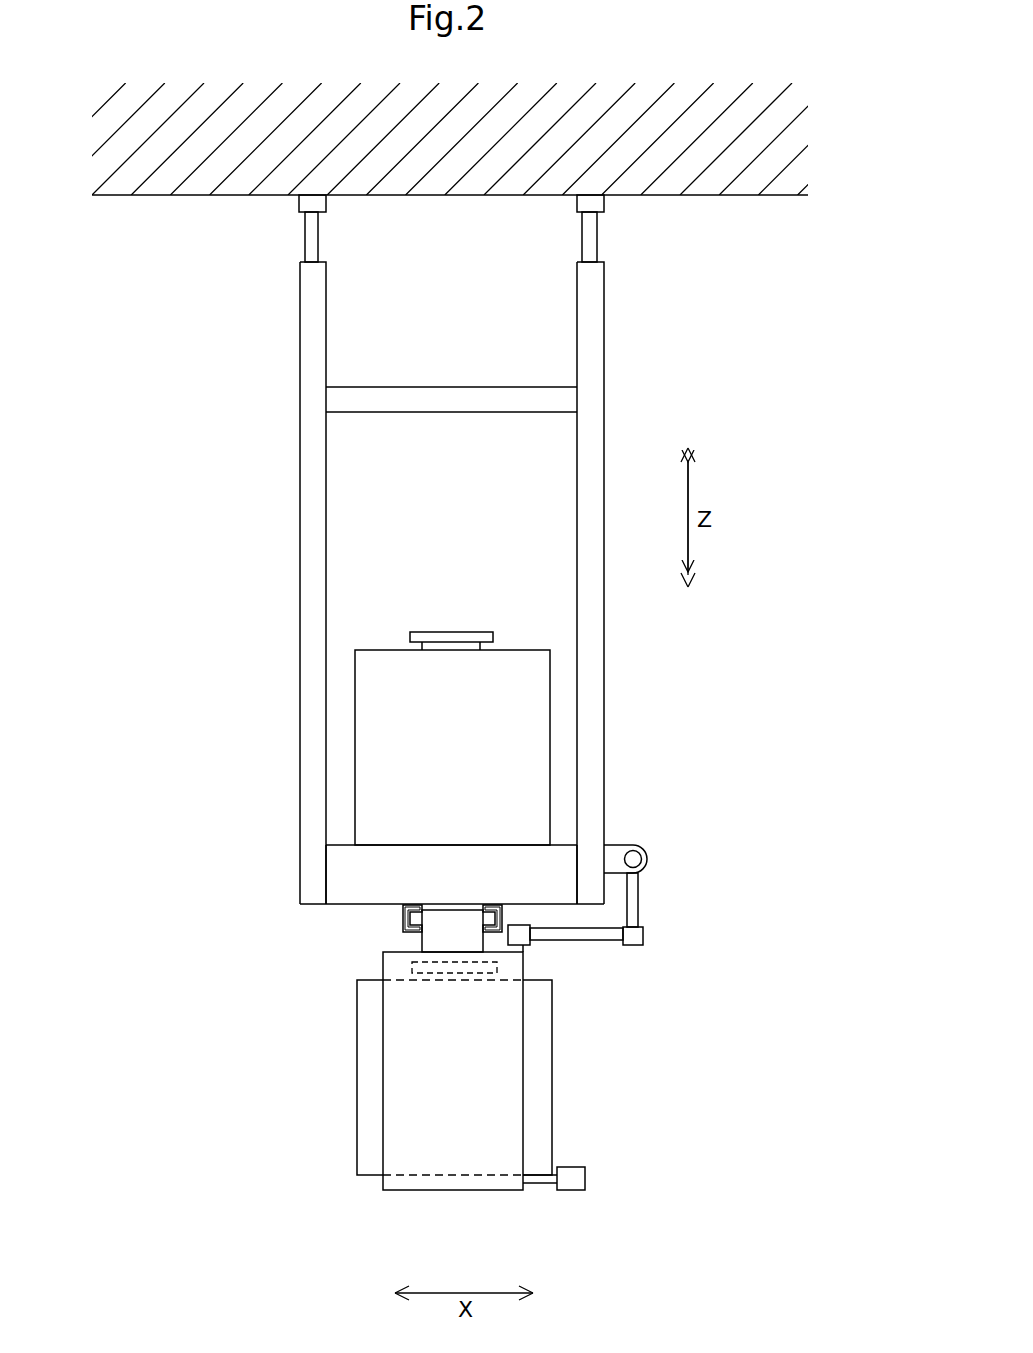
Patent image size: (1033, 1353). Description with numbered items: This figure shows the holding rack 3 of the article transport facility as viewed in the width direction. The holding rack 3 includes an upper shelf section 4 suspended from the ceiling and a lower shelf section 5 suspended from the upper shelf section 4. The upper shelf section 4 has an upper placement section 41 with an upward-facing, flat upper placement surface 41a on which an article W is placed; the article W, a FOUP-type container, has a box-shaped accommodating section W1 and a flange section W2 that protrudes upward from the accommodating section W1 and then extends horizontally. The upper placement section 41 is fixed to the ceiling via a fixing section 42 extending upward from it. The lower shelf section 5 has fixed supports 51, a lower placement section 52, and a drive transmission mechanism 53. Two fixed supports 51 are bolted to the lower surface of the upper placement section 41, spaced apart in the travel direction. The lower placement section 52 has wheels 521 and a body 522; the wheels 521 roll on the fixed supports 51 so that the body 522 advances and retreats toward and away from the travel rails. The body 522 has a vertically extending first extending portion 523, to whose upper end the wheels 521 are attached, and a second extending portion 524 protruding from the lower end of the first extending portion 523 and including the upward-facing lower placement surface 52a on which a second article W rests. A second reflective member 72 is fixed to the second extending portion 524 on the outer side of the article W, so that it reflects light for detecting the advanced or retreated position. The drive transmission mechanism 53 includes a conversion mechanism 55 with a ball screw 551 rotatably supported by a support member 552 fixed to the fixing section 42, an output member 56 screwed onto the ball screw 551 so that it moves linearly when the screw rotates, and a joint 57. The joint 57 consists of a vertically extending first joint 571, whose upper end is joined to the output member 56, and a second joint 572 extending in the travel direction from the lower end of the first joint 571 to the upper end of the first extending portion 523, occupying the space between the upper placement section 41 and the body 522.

The holding rack 3 is at (435, 733).
The upper shelf section 4 is at (356, 549).
The fixing section 42 is at (312, 595).
The upper placement section 41 is at (414, 838).
The upper placement surface 41a is at (397, 843).
The lower shelf section 5 is at (470, 1021).
The fixed supports 51 is at (405, 916).
The wheels 521 is at (485, 925).
The lower placement section 52 is at (394, 1111).
The body 522 is at (397, 1106).
The first extending portion 523 is at (413, 1032).
The second extending portion 524 is at (470, 1190).
The lower placement surface 52a is at (420, 1168).
The second reflective member 72 is at (570, 1190).
The drive transmission mechanism 53 is at (680, 897).
The conversion mechanism 55 is at (683, 819).
The ball screw 551 is at (636, 852).
The support member 552 is at (615, 843).
The output member 56 is at (648, 866).
The joint 57 is at (611, 970).
The first joint 571 is at (640, 905).
The second joint 572 is at (575, 940).
The article W is at (422, 864).
The accommodating section W1 is at (513, 650).
The flange section W2 is at (443, 632).